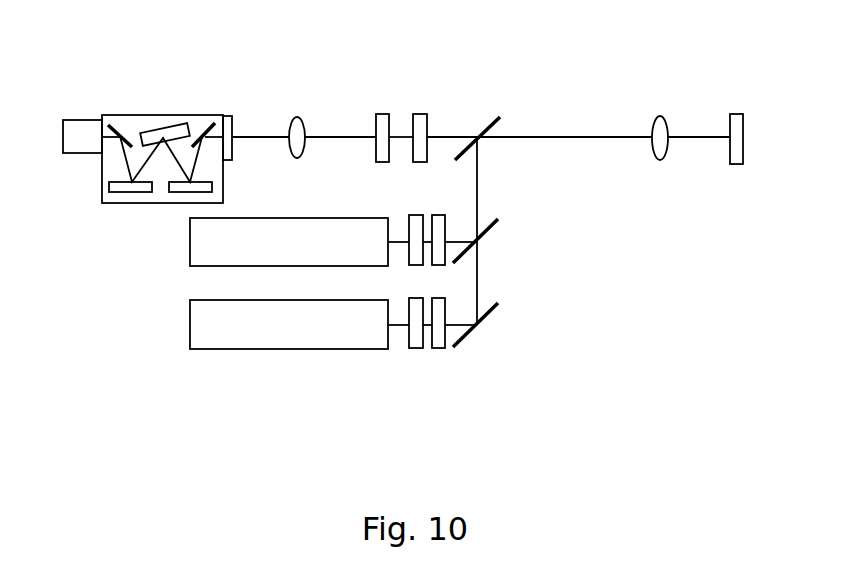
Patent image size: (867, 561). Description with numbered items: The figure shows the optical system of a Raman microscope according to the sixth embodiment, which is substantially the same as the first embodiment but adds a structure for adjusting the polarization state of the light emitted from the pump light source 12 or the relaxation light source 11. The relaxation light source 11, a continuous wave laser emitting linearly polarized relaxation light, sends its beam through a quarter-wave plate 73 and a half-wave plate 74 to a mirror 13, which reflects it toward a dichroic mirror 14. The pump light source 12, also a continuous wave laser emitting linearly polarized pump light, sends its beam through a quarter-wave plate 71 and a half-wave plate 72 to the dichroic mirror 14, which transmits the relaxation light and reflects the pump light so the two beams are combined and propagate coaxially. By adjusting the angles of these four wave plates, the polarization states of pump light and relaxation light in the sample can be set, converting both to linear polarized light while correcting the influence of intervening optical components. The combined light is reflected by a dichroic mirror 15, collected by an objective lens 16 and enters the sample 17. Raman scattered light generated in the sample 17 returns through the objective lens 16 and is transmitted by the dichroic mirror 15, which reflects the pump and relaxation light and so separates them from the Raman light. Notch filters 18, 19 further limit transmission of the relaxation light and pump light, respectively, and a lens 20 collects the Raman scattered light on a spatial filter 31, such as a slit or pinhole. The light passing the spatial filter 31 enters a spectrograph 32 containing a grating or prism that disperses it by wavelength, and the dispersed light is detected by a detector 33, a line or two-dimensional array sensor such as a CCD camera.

The relaxation light source 11 is at (190, 325).
The pump light source 12 is at (190, 243).
The mirror 13 is at (492, 315).
The dichroic mirror 14 is at (492, 227).
The dichroic mirror 15 is at (486, 118).
The objective lens 16 is at (656, 116).
The sample 17 is at (735, 114).
The notch filter 18 is at (419, 114).
The notch filter 19 is at (383, 114).
The lens 20 is at (297, 117).
The spatial filter 31 is at (223, 115).
The spectrograph 32 is at (148, 114).
The detector 33 is at (82, 120).
The λ/4 plate 71 is at (417, 215).
The λ/2 plate 72 is at (438, 215).
The λ/4 plate 73 is at (415, 349).
The λ/2 plate 74 is at (438, 349).